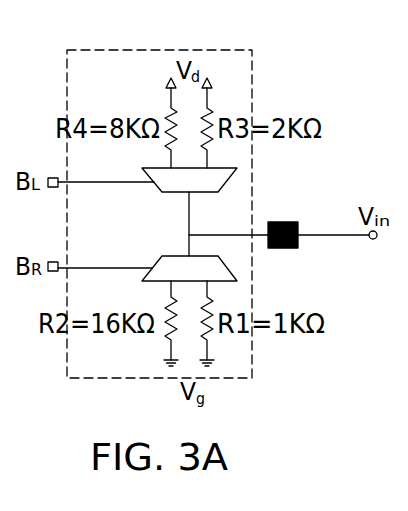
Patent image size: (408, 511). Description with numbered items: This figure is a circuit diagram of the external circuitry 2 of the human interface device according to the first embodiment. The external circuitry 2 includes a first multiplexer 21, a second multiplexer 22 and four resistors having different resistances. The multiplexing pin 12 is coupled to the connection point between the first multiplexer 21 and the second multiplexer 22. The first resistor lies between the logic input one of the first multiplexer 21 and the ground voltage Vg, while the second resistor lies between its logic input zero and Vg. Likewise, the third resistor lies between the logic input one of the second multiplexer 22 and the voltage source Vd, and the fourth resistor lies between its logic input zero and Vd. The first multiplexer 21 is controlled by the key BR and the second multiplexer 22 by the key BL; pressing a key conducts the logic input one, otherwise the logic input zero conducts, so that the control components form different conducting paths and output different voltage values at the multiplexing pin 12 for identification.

The external circuitry 2 is at (253, 86).
The second multiplexer 22 is at (232, 177).
The first multiplexer 21 is at (232, 264).
The multiplexing pin 12 is at (298, 224).